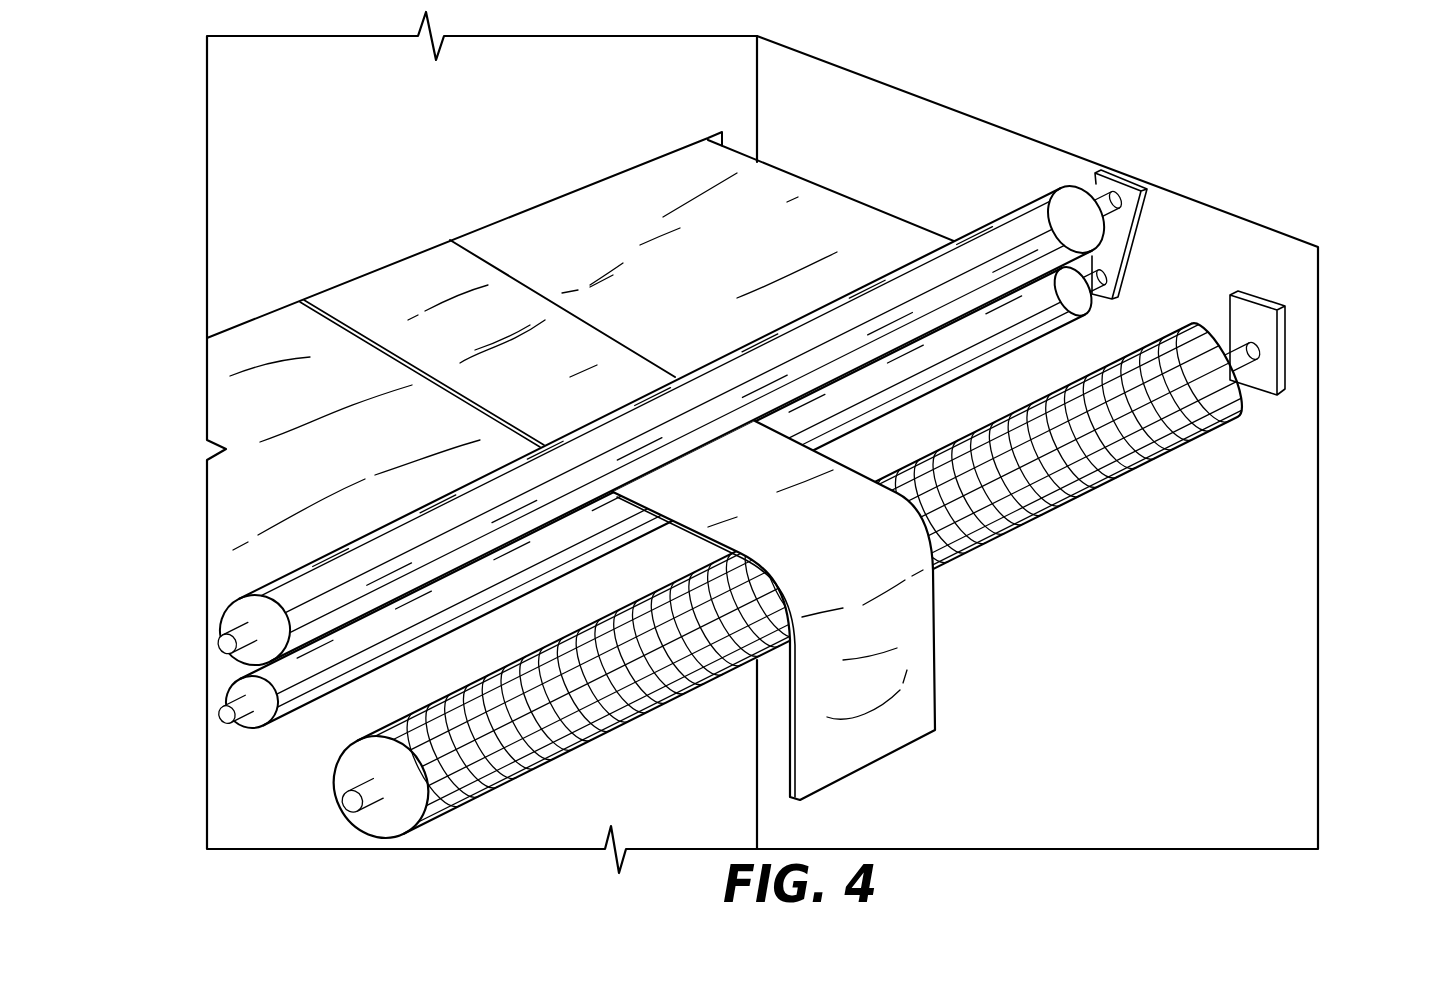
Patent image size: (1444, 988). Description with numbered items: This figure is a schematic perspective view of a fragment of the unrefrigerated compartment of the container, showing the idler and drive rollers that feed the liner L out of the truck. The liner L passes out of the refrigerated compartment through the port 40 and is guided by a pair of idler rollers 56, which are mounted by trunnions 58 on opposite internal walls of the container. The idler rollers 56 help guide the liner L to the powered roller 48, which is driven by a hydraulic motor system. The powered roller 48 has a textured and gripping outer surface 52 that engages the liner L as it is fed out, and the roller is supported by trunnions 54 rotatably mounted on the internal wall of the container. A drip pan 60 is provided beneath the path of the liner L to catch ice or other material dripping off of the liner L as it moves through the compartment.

The port 40 is at (590, 192).
The drip pan 60 is at (857, 227).
The idler rollers 56 is at (1057, 297).
The trunnions 58 is at (1117, 252).
The trunnions 54 is at (1237, 320).
The powered roller 48 is at (1238, 412).
The textured and gripping outer surface 52 is at (1088, 452).
The liner L is at (920, 683).